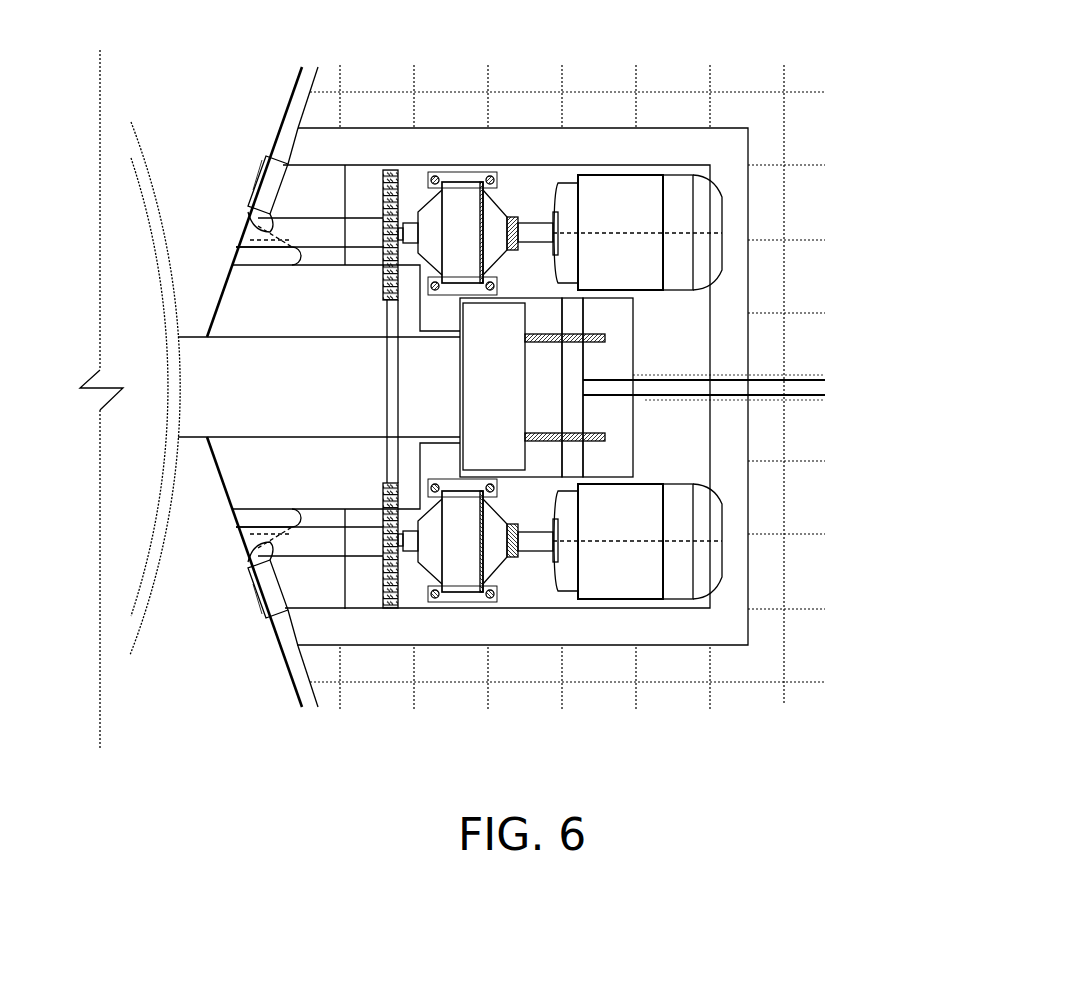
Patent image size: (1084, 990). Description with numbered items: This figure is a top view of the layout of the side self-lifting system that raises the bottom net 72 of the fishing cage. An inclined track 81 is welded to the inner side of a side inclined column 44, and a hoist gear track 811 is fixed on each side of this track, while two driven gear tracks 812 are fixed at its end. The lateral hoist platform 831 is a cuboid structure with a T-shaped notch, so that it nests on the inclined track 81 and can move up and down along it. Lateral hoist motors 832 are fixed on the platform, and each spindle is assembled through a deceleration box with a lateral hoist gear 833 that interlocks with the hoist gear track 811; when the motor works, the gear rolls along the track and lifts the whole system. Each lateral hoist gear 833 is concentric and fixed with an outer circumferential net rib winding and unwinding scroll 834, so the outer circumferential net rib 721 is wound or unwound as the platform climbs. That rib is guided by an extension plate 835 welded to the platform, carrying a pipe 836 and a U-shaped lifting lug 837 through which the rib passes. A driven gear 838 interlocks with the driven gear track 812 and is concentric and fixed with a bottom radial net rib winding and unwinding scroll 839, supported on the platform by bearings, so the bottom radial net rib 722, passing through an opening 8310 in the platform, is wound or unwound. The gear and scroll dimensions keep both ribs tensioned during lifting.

The bottom net 72 is at (785, 92).
The outer circumferential net rib 721 is at (290, 100).
The bottom radial net rib 722 is at (640, 369).
The side inclined column 44 is at (138, 630).
The inclined track 81 is at (527, 402).
The hoist gear track 811 is at (383, 322).
The driven gear track 812 is at (530, 442).
The lateral hoist platform 831 is at (530, 612).
The lateral hoist motor 832 is at (640, 605).
The lateral hoist gear 833 is at (402, 602).
The outer circumferential net rib winding and unwinding scroll 834 is at (308, 557).
The extension plate 835 is at (308, 163).
The pipe 836 is at (255, 177).
The U-shaped lifting lug 837 is at (262, 240).
The driven gear 838 is at (605, 338).
The bottom radial net rib winding and unwinding scroll 839 is at (582, 305).
The opening 8310 is at (608, 388).